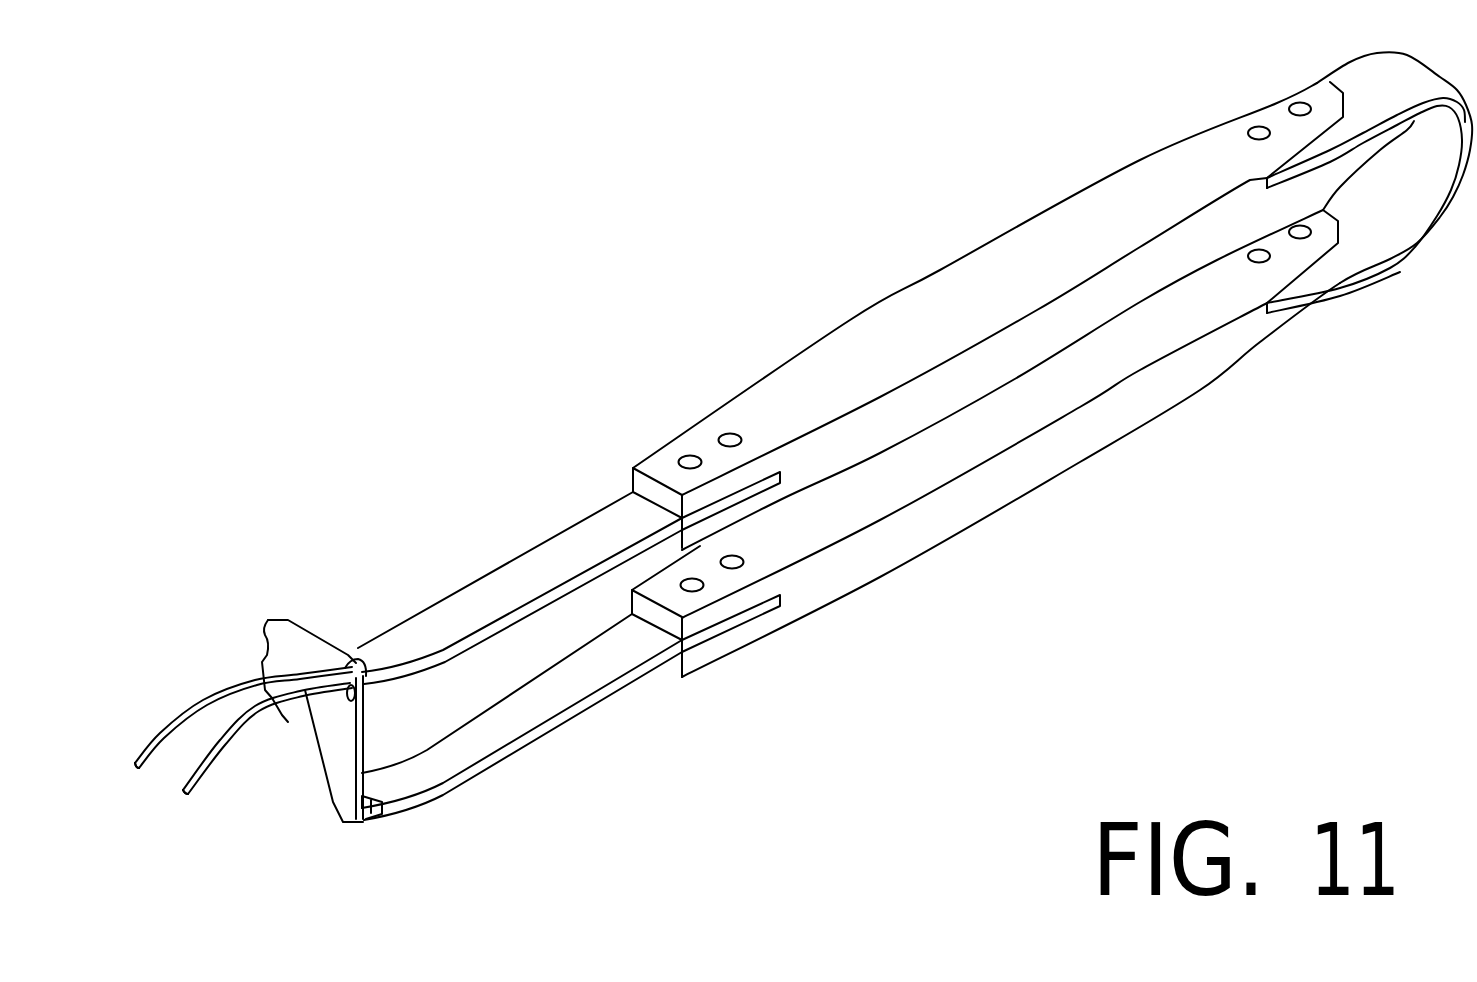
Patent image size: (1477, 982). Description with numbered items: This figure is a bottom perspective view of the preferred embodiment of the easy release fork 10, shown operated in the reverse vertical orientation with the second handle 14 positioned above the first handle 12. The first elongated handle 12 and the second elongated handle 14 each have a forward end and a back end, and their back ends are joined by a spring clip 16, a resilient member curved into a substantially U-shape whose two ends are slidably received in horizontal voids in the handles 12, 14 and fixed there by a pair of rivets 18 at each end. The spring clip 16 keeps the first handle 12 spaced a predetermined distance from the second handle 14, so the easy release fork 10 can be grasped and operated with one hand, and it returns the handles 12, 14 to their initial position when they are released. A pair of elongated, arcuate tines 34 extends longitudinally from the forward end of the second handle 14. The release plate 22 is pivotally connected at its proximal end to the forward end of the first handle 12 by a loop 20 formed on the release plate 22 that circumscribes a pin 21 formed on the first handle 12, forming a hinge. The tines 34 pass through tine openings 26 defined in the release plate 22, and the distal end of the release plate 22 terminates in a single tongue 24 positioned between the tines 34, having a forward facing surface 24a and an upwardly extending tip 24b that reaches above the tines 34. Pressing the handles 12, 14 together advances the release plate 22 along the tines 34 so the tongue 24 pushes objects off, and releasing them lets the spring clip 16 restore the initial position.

The easy release fork 10 is at (453, 237).
The first elongated handle 12 is at (982, 478).
The second elongated handle 14 is at (967, 277).
The spring clip 16 is at (1397, 203).
The rivets 18 is at (1300, 108).
The loop 20 is at (333, 801).
The pin 21 is at (380, 820).
The release plate 22 is at (340, 733).
The tongue 24 is at (284, 650).
The forward facing surface 24a is at (289, 726).
The upwardly extending tip 24b is at (276, 662).
The tine openings 26 is at (365, 655).
The tines 34 is at (135, 767).